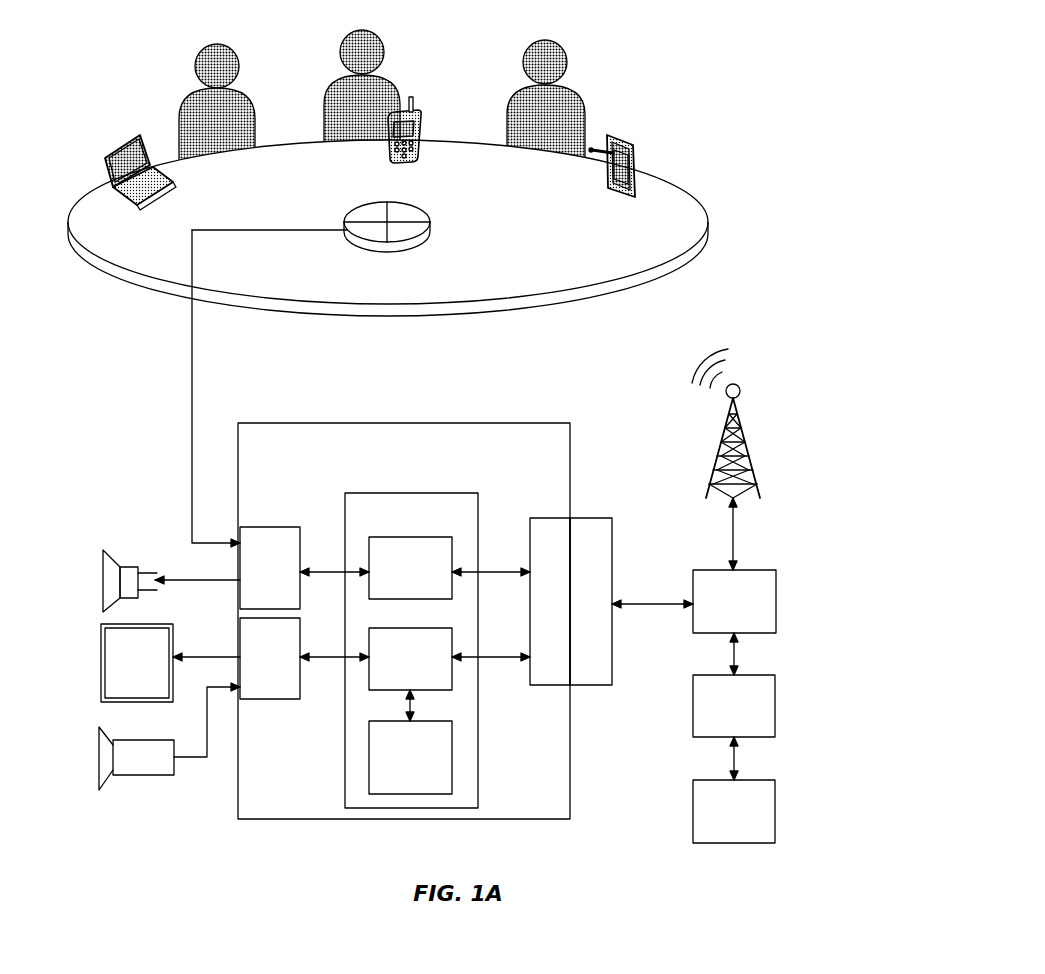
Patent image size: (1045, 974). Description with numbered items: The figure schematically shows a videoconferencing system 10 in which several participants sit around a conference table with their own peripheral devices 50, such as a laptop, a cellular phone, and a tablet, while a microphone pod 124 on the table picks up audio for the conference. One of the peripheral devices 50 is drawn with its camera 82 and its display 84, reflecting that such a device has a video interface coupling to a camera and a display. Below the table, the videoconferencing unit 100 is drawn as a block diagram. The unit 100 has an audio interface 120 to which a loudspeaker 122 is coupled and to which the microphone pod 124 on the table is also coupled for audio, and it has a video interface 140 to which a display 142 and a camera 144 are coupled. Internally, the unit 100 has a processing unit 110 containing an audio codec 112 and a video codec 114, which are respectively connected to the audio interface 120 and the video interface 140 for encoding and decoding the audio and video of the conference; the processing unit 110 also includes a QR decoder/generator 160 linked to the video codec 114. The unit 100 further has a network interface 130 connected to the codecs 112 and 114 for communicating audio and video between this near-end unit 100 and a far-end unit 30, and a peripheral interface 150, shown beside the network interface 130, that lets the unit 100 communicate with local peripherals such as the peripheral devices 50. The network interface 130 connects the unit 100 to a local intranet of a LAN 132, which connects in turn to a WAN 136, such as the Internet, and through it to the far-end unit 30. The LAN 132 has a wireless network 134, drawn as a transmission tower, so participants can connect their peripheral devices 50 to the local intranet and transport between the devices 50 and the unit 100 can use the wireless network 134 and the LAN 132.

The videoconferencing system 10 is at (657, 22).
The peripheral device 50 is at (127, 139).
The camera 82 is at (622, 135).
The display 84 is at (632, 168).
The microphone pod 124 is at (425, 205).
The videoconferencing unit 100 is at (538, 423).
The processing unit 110 is at (478, 493).
The audio codec 112 is at (452, 540).
The video codec 114 is at (452, 678).
The QR decoder/generator 160 is at (452, 772).
The audio interface 120 is at (268, 527).
The video interface 140 is at (265, 700).
The peripheral interface 150 is at (550, 517).
The network interface 130 is at (602, 517).
The LAN 132 is at (755, 570).
The wireless network 134 is at (750, 437).
The WAN 136 is at (755, 675).
The far-end unit 30 is at (768, 780).
The loudspeaker 122 is at (128, 567).
The display 142 is at (101, 645).
The camera 144 is at (130, 775).